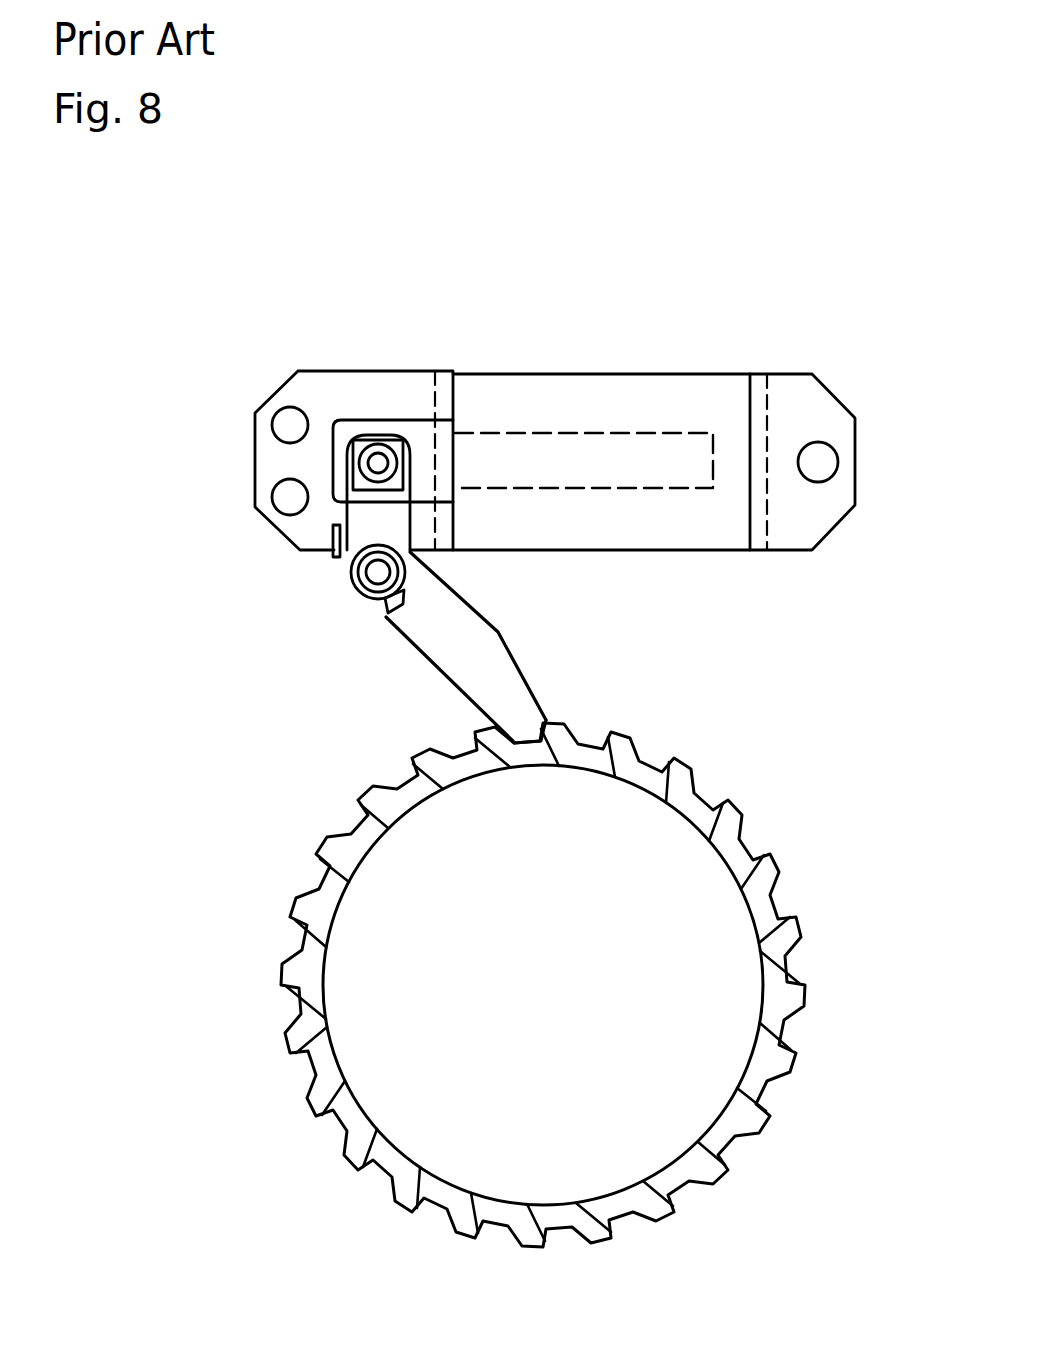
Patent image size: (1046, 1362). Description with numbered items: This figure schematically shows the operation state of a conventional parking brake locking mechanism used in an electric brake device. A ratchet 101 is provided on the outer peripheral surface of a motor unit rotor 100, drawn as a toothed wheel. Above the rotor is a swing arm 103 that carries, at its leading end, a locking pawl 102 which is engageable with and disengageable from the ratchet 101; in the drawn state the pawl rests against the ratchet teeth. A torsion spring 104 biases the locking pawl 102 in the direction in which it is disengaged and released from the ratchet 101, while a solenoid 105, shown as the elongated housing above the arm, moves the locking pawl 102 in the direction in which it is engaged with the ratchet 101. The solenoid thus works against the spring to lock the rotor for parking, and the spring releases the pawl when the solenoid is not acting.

The motor unit rotor 100 is at (352, 853).
The ratchet 101 is at (290, 1048).
The locking pawl 102 is at (523, 707).
The swing arm 103 is at (435, 642).
The torsion spring 104 is at (347, 567).
The solenoid 105 is at (525, 373).